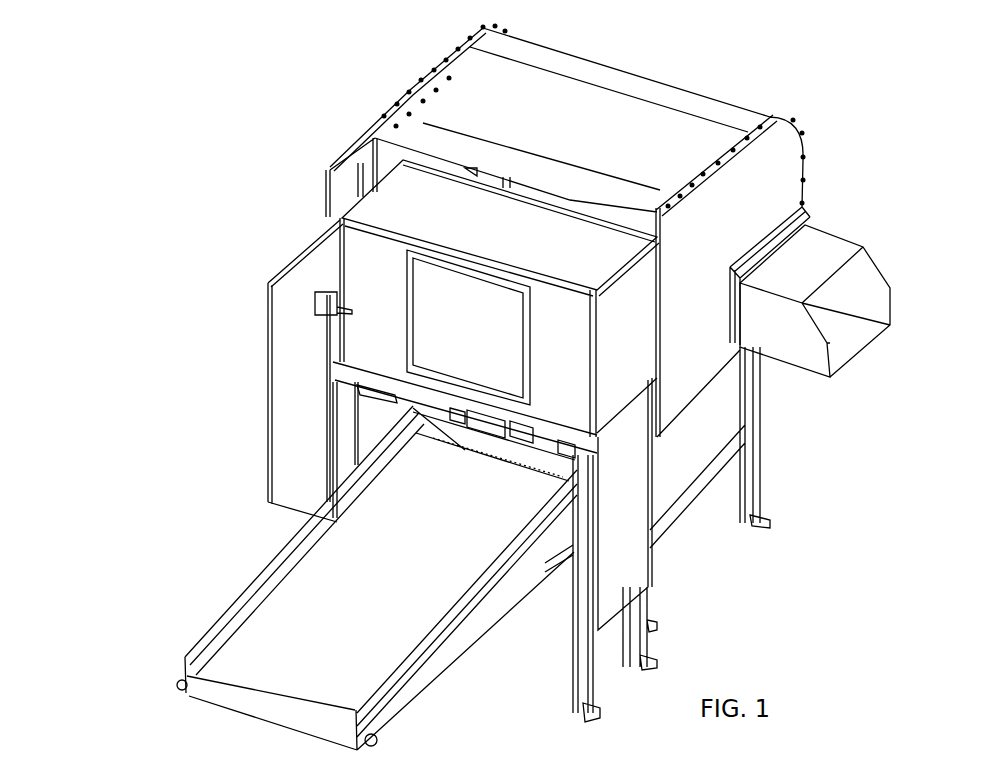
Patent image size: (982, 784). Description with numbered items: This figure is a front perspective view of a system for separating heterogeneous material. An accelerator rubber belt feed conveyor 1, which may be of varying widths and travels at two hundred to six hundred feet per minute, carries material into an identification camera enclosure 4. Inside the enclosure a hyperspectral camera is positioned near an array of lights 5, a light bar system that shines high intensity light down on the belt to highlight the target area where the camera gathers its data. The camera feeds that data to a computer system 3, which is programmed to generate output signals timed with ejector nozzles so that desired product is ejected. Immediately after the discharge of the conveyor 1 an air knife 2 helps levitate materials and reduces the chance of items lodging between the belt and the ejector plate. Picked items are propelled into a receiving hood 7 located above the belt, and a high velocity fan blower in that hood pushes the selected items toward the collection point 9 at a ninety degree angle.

The conveyor 1 is at (180, 657).
The air knife 2 is at (465, 449).
The computer system 3 is at (252, 278).
The identification camera enclosure 4 is at (357, 221).
The array of lights 5 is at (418, 403).
The receiving hood 7 is at (800, 119).
The collection point 9 is at (863, 358).